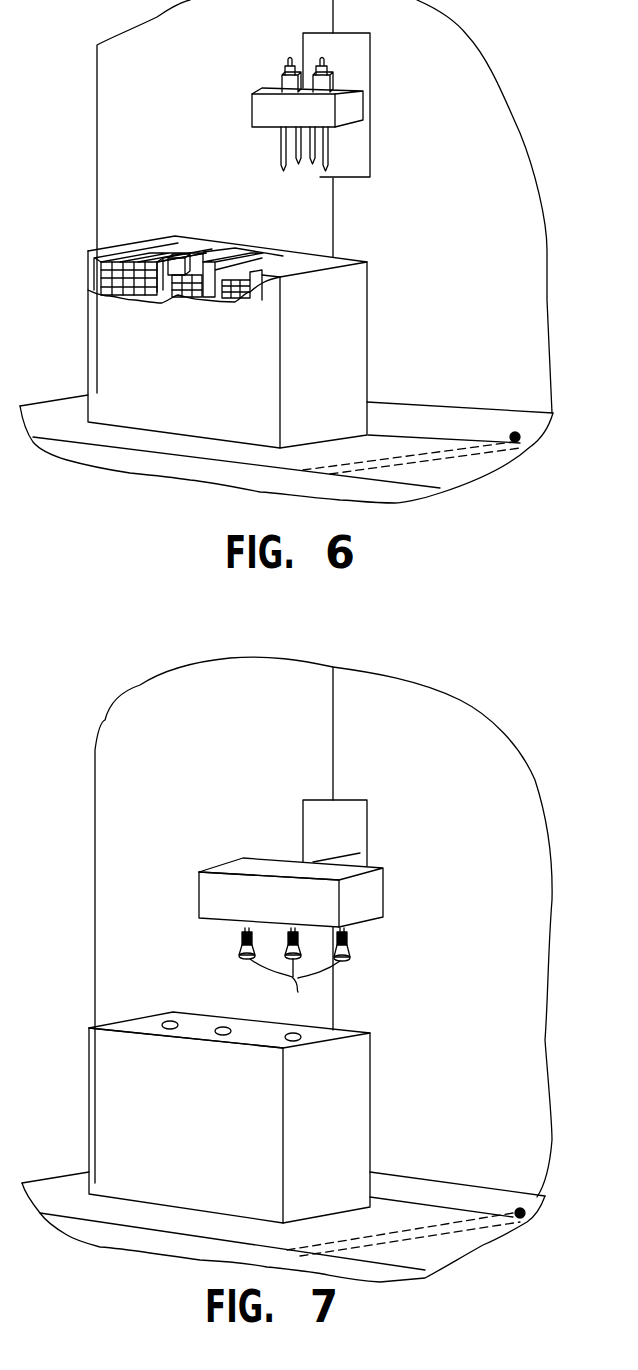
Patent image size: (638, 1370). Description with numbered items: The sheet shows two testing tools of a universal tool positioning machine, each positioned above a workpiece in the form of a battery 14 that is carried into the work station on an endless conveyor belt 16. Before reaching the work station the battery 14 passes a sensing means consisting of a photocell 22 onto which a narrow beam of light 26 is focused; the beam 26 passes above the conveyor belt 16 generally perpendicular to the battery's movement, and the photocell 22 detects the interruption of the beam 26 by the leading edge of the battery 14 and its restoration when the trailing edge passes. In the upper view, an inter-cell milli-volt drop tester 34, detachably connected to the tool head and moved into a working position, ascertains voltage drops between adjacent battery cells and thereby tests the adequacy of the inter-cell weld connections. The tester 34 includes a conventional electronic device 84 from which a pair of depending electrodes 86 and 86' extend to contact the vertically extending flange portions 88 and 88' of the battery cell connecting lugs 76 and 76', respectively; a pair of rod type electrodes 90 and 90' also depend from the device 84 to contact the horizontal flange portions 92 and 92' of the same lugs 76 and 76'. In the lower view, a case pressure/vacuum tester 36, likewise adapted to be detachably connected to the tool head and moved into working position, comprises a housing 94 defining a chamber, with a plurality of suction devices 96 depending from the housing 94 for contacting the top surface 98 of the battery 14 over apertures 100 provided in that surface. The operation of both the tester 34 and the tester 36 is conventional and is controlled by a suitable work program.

In FIG. 6, the battery 14 is at (345, 352).
In FIG. 7, the battery 14 is at (338, 1143).
In FIG. 6, the endless conveyor belt 16 is at (460, 470).
In FIG. 7, the endless conveyor belt 16 is at (440, 1250).
In FIG. 6, the photocell 22 is at (520, 434).
In FIG. 7, the photocell 22 is at (526, 1211).
In FIG. 6, the beam of light 26 is at (441, 445).
In FIG. 7, the beam of light 26 is at (475, 1207).
In FIG. 6, the inter-cell milli-volt drop tester 34 is at (238, 113).
In FIG. 7, the case pressure/vacuum tester 36 is at (196, 893).
In FIG. 6, the battery cell connecting lug 76 is at (134, 238).
In FIG. 6, the battery cell connecting lug 76' is at (243, 247).
In FIG. 6, the electronic device 84 is at (345, 117).
In FIG. 6, the depending electrode 86 is at (300, 176).
In FIG. 6, the depending electrode 86' is at (346, 176).
In FIG. 6, the vertically extending flange portion 88 is at (178, 246).
In FIG. 6, the vertically extending flange portion 88' is at (196, 238).
In FIG. 6, the rod type electrode 90 is at (252, 152).
In FIG. 6, the rod type electrode 90' is at (367, 152).
In FIG. 6, the horizontal flange portion 92 is at (153, 294).
In FIG. 6, the horizontal flange portion 92' is at (185, 307).
In FIG. 7, the housing 94 is at (370, 905).
In FIG. 7, the suction devices 96 is at (294, 966).
In FIG. 7, the top surface 98 is at (350, 1040).
In FIG. 7, the apertures 100 is at (290, 1033).